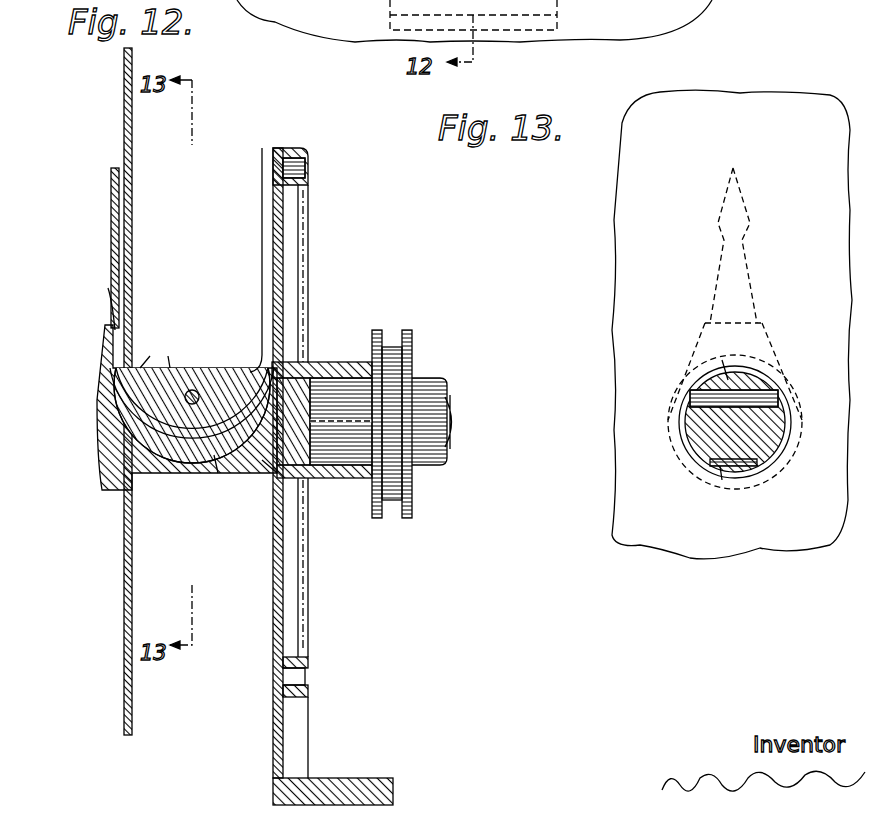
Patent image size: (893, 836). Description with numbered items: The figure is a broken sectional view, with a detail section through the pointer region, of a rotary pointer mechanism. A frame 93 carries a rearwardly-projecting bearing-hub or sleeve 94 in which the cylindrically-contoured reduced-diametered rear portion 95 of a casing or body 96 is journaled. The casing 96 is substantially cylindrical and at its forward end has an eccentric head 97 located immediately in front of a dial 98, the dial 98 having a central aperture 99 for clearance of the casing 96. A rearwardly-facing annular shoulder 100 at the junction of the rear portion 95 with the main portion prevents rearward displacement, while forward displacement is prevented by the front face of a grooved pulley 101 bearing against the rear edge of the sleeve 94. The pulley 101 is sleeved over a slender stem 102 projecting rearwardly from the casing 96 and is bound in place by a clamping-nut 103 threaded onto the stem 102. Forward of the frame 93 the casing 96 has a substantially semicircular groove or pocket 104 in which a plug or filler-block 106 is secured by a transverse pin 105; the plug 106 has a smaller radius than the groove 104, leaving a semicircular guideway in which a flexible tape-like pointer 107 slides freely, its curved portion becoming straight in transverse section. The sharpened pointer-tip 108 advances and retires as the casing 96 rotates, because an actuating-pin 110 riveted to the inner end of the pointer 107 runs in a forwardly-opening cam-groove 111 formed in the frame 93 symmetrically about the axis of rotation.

In FIG. 12, the frame 93 is at (310, 264).
In FIG. 12, the bearing-hub or sleeve 94 is at (338, 362).
In FIG. 12, the reduced-diametered rear portion 95 is at (338, 455).
In FIG. 12, the casing or body 96 is at (198, 482).
In FIG. 13, the casing or body 96 is at (690, 455).
In FIG. 12, the eccentric head 97 is at (98, 475).
In FIG. 13, the eccentric head 97 is at (688, 358).
In FIG. 12, the dial 98 is at (124, 122).
In FIG. 13, the dial 98 is at (625, 270).
In FIG. 12, the aperture 99 is at (136, 474).
In FIG. 13, the aperture 99 is at (680, 436).
In FIG. 12, the annular shoulder 100 is at (276, 473).
In FIG. 12, the grooved pulley 101 is at (377, 332).
In FIG. 12, the stem 102 is at (452, 425).
In FIG. 12, the clamping-nut 103 is at (440, 380).
In FIG. 12, the groove or pocket 104 is at (140, 368).
In FIG. 13, the groove or pocket 104 is at (727, 470).
In FIG. 12, the transverse pin 105 is at (193, 390).
In FIG. 13, the transverse pin 105 is at (690, 398).
In FIG. 12, the plug or filler-block 106 is at (180, 347).
In FIG. 13, the plug or filler-block 106 is at (738, 357).
In FIG. 12, the flexible tape-like pointer 107 is at (112, 292).
In FIG. 13, the flexible tape-like pointer 107 is at (716, 340).
In FIG. 12, the pointer-tip 108 is at (112, 192).
In FIG. 13, the pointer-tip 108 is at (732, 180).
In FIG. 12, the actuating-pin 110 is at (290, 150).
In FIG. 12, the cam-groove 111 is at (304, 168).